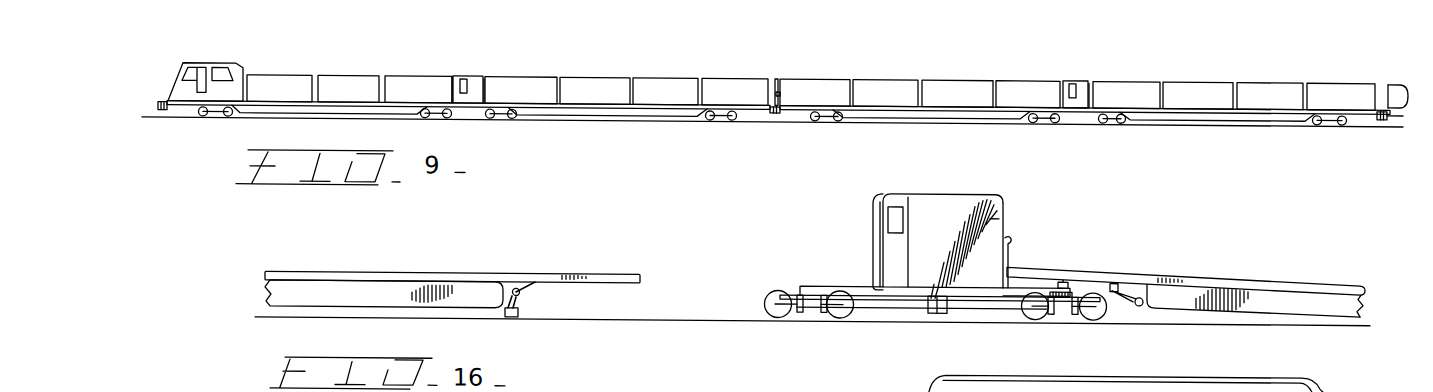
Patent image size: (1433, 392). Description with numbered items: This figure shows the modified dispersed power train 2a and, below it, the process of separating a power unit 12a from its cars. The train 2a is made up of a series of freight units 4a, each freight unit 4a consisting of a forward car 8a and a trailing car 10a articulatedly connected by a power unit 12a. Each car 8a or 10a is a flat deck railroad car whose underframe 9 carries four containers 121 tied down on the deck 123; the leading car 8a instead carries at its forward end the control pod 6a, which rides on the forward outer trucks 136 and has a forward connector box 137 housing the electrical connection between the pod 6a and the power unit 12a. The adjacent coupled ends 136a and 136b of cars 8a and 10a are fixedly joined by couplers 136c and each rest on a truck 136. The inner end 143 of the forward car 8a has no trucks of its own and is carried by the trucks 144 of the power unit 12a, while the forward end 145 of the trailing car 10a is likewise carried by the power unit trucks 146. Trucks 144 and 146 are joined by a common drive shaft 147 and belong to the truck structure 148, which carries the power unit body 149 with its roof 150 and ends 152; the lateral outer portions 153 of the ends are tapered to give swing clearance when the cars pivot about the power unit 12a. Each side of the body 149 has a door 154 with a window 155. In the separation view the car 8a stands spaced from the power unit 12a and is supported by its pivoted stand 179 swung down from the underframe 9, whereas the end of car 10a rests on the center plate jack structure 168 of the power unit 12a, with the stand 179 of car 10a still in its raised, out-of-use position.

In FIG. 9, the train 2a is at (619, 71).
In FIG. 9, the freight unit 4a is at (338, 112).
In FIG. 16, the freight unit 4a is at (686, 244).
In FIG. 9, the control pod 6a is at (217, 63).
In FIG. 9, the forward car 8a is at (343, 73).
In FIG. 16, the forward car 8a is at (516, 270).
In FIG. 16, the underframe 9 is at (1255, 304).
In FIG. 9, the trailing car 10a is at (650, 74).
In FIG. 16, the trailing car 10a is at (1254, 270).
In FIG. 9, the power unit 12a is at (474, 73).
In FIG. 16, the power unit 12a is at (947, 187).
In FIG. 9, the container 121 is at (272, 73).
In FIG. 9, the deck 123 is at (293, 103).
In FIG. 16, the deck 123 is at (427, 270).
In FIG. 9, the truck 136 is at (204, 117).
In FIG. 9, the coupled end of car 8a 136a is at (783, 80).
In FIG. 9, the coupled end of car 10a 136b is at (777, 73).
In FIG. 9, the coupler 136c is at (774, 109).
In FIG. 9, the forward connector box 137 is at (158, 101).
In FIG. 9, the inner end of forward car 143 is at (453, 72).
In FIG. 9, the power unit truck 144 is at (447, 116).
In FIG. 16, the power unit truck 144 is at (778, 314).
In FIG. 9, the forward end of trailing car 145 is at (485, 74).
In FIG. 16, the forward end of trailing car 145 is at (1012, 256).
In FIG. 9, the power unit truck 146 is at (513, 116).
In FIG. 16, the power unit truck 146 is at (1092, 316).
In FIG. 16, the common drive shaft 147 is at (900, 306).
In FIG. 9, the truck structure 148 is at (492, 116).
In FIG. 16, the truck structure 148 is at (987, 305).
In FIG. 16, the power unit body 149 is at (1006, 205).
In FIG. 16, the roof 150 is at (978, 217).
In FIG. 16, the end 152 is at (872, 226).
In FIG. 16, the lateral outer portion 153 is at (872, 192).
In FIG. 16, the door 154 is at (893, 243).
In FIG. 16, the window 155 is at (893, 200).
In FIG. 16, the center plate jack structure 168 is at (1070, 275).
In FIG. 16, the support stand 179 is at (518, 304).